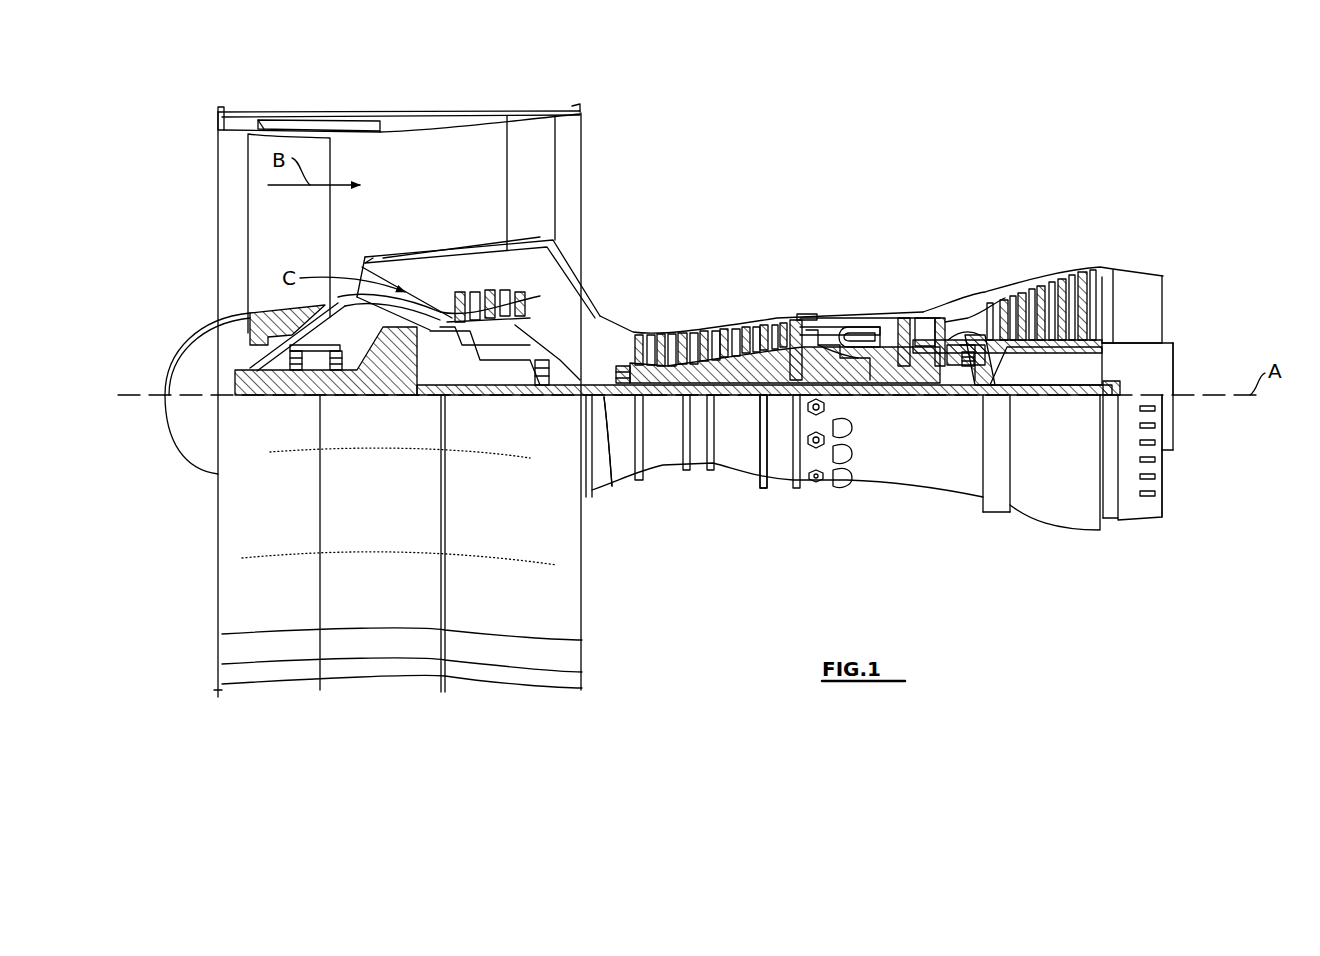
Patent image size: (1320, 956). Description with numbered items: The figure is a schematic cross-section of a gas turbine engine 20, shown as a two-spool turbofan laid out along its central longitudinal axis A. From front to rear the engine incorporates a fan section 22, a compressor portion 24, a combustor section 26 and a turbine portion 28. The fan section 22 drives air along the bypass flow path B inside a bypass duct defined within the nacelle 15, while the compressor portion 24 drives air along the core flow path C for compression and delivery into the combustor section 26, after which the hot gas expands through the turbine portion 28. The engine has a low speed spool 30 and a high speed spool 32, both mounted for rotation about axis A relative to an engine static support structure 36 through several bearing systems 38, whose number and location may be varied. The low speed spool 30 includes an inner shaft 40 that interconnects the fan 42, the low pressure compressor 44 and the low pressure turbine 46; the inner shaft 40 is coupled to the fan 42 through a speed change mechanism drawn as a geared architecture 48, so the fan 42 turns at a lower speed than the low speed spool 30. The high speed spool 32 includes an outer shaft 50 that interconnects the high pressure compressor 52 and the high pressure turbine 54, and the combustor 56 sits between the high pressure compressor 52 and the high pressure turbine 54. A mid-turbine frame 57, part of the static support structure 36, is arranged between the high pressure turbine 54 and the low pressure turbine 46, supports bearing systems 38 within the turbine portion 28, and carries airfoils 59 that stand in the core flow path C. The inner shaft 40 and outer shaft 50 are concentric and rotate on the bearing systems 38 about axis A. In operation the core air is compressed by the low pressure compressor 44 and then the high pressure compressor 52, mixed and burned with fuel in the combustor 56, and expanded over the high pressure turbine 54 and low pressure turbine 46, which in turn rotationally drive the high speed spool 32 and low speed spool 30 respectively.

The nacelle 15 is at (398, 112).
The gas turbine engine 20 is at (862, 162).
The fan section 22 is at (330, 100).
The compressor portion 24 is at (632, 304).
The combustor section 26 is at (856, 296).
The turbine portion 28 is at (1000, 257).
The low speed spool 30 is at (741, 400).
The high speed spool 32 is at (782, 355).
The engine static support structure 36 is at (780, 492).
The bearing systems 38 is at (540, 385).
The inner shaft 40 is at (612, 484).
The fan 42 is at (300, 243).
The low pressure compressor 44 is at (512, 312).
The low pressure turbine 46 is at (1050, 285).
The geared architecture 48 is at (405, 378).
The outer shaft 50 is at (860, 382).
The high pressure compressor 52 is at (714, 362).
The high pressure turbine 54 is at (922, 318).
The combustor 56 is at (858, 335).
The mid-turbine frame 57 is at (962, 306).
The airfoils 59 is at (1000, 370).